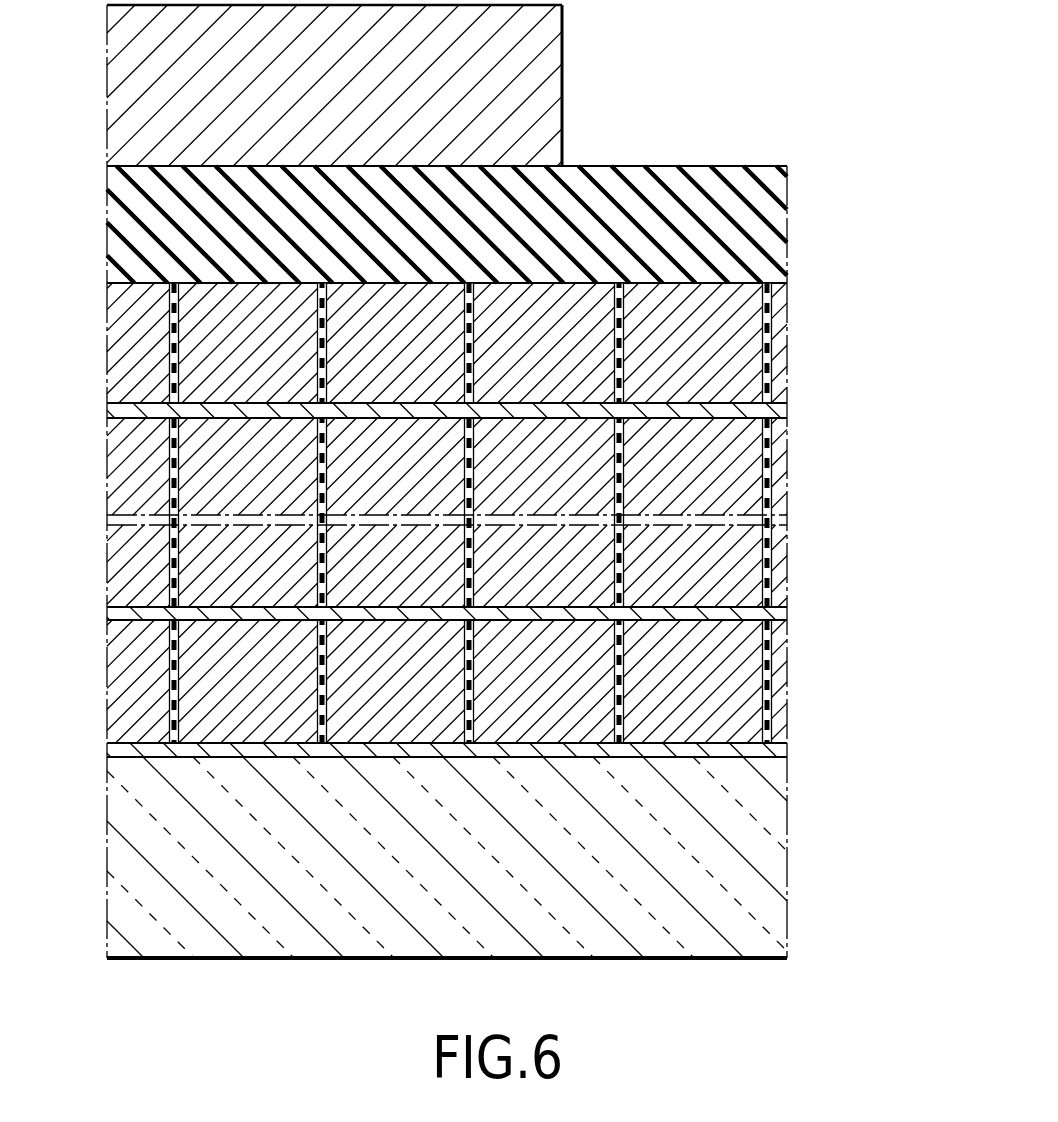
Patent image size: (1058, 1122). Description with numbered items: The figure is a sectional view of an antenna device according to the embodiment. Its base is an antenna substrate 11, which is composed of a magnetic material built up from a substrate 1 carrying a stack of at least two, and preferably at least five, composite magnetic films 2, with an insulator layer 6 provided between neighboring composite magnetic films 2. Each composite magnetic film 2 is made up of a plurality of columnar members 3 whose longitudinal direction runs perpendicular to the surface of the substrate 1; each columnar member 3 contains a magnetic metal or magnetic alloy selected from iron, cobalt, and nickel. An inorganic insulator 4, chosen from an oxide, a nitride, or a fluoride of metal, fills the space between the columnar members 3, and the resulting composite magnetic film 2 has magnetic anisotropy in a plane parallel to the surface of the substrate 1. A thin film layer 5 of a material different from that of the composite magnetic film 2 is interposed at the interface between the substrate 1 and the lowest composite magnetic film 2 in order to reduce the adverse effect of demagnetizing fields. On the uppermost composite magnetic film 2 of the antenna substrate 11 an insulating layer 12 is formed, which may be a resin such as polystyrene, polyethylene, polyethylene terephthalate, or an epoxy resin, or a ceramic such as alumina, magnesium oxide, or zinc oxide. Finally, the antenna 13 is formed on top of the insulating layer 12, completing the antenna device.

The substrate 1 is at (777, 875).
The composite magnetic film 2 is at (797, 344).
The columnar member 3 is at (137, 496).
The inorganic insulator 4 is at (690, 493).
The thin film layer 5 is at (780, 751).
The insulator layer 6 is at (780, 415).
The antenna substrate 11 is at (873, 290).
The insulating layer 12 is at (782, 198).
The antenna 13 is at (550, 62).